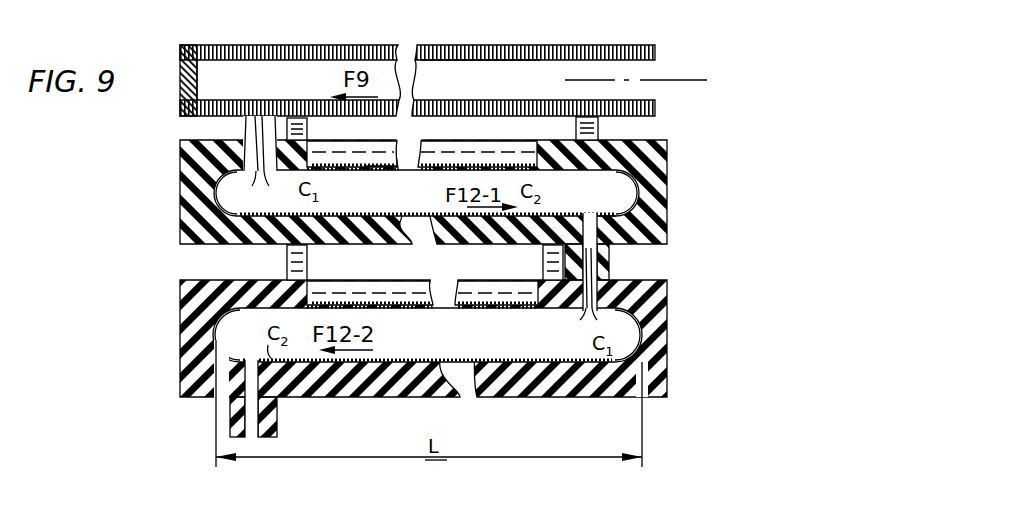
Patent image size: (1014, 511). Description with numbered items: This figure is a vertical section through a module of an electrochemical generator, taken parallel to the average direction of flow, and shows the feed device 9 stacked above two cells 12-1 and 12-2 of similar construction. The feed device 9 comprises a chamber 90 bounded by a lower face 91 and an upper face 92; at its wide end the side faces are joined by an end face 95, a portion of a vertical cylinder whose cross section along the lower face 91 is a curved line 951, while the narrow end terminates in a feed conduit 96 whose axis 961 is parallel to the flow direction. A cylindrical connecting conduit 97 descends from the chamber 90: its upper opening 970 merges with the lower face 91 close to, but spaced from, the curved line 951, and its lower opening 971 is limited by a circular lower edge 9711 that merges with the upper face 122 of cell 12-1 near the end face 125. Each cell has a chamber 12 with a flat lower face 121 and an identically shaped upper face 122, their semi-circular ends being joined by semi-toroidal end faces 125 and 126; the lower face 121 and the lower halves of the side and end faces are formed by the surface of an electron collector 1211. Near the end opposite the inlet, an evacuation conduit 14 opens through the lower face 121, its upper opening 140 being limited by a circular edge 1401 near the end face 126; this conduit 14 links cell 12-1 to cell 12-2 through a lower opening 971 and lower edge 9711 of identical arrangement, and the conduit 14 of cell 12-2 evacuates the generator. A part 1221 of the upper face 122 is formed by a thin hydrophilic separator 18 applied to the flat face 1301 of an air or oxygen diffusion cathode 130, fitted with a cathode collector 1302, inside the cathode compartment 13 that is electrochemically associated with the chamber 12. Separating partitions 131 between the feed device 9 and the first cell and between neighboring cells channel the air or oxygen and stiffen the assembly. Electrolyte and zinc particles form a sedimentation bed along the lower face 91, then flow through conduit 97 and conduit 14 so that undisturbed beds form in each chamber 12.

The feed device 9 is at (417, 63).
The chamber 90 is at (543, 92).
The lower face 91 is at (549, 100).
The upper face 92 is at (490, 60).
The end face 95 is at (199, 84).
The curved line 951 is at (199, 100).
The feed conduit 96 is at (577, 45).
The axis 961 is at (659, 78).
The connecting conduit 97 is at (270, 117).
The upper opening 970 is at (258, 117).
The lower opening 971 is at (259, 172).
The circular lower edge 9711 is at (246, 189).
The chamber 12 is at (521, 360).
The cell 12-1 is at (180, 217).
The cell 12-2 is at (182, 342).
The lower face 121 is at (356, 215).
The electron collector 1211 is at (323, 245).
The upper face 122 is at (361, 188).
The part of the upper face 1221 is at (521, 166).
The end face 125 is at (213, 205).
The end face 126 is at (641, 197).
The compartment 13 is at (525, 141).
The air or oxygen diffusion cathode 130 is at (515, 141).
The flat face 1301 is at (328, 162).
The cathode collector 1302 is at (467, 145).
The separating partitions 131 is at (599, 125).
The evacuation conduit 14 is at (608, 256).
The upper opening 140 is at (590, 211).
The circular edge 1401 is at (594, 211).
The hydrophilic separator 18 is at (371, 165).